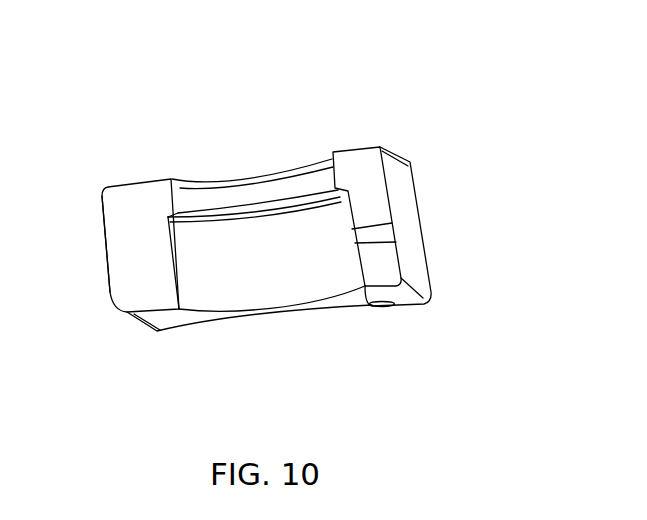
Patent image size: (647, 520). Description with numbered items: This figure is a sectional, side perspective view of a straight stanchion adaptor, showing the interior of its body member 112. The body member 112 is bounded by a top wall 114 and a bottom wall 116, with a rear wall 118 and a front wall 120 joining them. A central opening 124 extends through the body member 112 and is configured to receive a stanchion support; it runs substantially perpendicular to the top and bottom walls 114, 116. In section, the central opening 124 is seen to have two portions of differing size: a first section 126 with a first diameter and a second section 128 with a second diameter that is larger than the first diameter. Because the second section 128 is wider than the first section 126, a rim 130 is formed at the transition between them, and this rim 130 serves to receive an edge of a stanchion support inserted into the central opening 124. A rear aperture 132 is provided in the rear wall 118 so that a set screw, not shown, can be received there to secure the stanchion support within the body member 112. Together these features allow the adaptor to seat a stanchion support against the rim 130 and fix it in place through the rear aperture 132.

The body member 112 is at (367, 146).
The top wall 114 is at (133, 184).
The bottom wall 116 is at (160, 318).
The rear wall 118 is at (422, 267).
The front wall 120 is at (103, 240).
The central opening 124 is at (211, 306).
The first section 126 is at (245, 190).
The second section 128 is at (307, 287).
The rim 130 is at (280, 212).
The rear aperture 132 is at (392, 233).